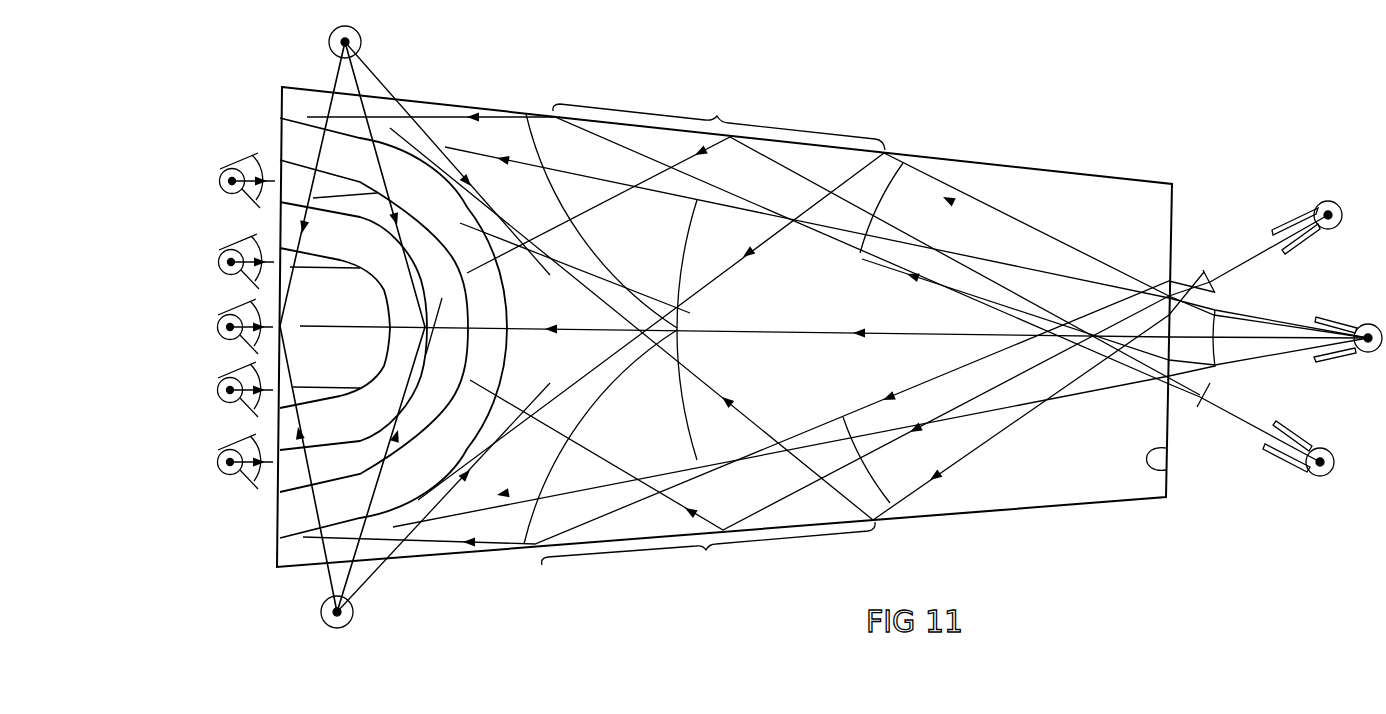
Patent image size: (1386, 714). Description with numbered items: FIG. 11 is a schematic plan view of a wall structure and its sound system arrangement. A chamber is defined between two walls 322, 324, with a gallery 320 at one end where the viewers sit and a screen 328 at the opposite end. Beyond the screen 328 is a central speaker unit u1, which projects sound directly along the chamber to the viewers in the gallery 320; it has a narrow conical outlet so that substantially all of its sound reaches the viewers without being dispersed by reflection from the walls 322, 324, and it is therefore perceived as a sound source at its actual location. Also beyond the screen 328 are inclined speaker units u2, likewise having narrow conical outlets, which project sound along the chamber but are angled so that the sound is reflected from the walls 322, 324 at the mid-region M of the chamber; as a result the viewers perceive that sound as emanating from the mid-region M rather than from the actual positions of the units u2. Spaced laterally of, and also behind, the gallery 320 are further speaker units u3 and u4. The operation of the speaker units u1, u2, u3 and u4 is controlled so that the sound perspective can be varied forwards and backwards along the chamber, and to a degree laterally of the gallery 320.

The gallery 320 is at (427, 380).
The wall 322 is at (1124, 243).
The wall 324 is at (1000, 200).
The screen 328 is at (1167, 472).
The mid-region M is at (713, 337).
The central speaker unit u1 is at (1366, 354).
The inclined speaker unit u2 is at (1327, 203).
The speaker unit u3 is at (362, 38).
The speaker unit u4 is at (205, 507).